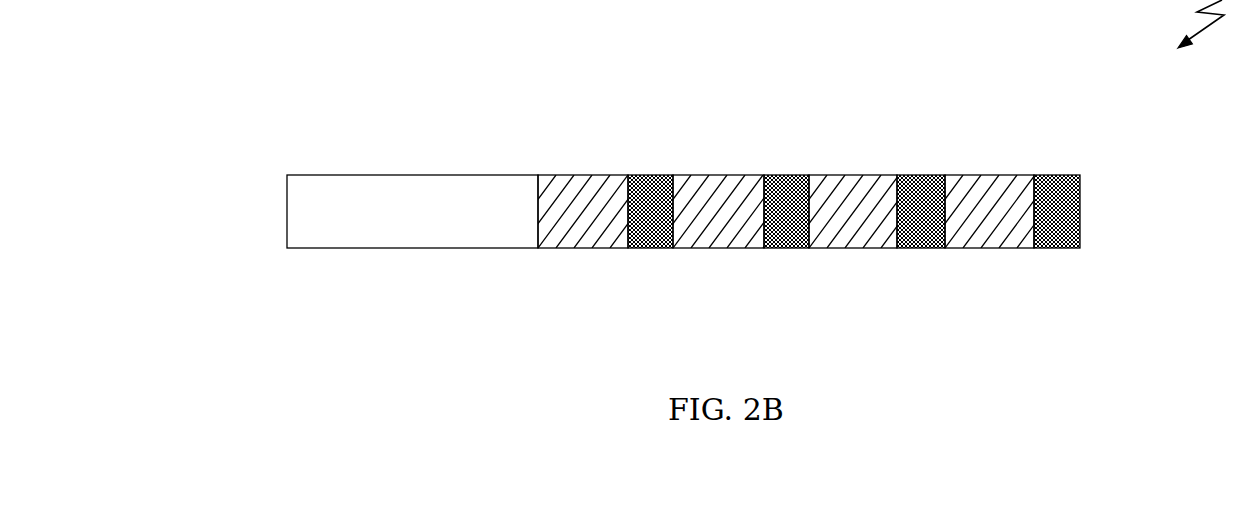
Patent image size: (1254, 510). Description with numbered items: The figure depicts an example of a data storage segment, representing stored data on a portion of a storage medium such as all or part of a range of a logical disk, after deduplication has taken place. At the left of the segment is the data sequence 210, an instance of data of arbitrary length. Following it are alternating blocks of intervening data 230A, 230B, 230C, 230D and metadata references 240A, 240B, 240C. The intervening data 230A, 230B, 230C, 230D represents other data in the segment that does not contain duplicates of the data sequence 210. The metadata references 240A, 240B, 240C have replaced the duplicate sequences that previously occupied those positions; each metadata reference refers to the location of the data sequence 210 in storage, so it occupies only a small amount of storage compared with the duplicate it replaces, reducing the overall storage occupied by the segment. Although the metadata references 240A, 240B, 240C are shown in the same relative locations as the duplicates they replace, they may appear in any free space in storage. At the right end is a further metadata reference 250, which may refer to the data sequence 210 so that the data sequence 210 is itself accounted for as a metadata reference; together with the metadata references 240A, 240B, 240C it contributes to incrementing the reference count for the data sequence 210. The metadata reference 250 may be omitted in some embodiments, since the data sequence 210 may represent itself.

The data sequence 210 is at (406, 175).
The intervening data 230A is at (583, 250).
The intervening data 230B is at (720, 250).
The intervening data 230C is at (855, 250).
The intervening data 230D is at (993, 250).
The metadata reference 240A is at (647, 175).
The metadata reference 240B is at (783, 175).
The metadata reference 240C is at (918, 175).
The metadata reference 250 is at (1052, 175).